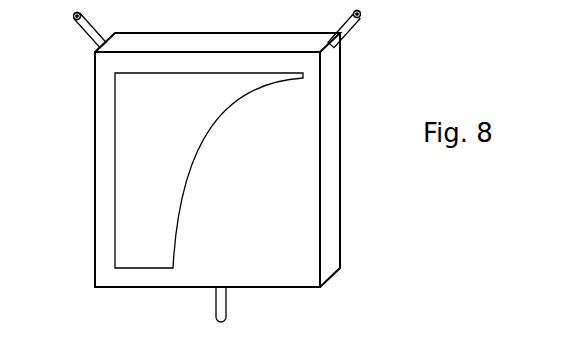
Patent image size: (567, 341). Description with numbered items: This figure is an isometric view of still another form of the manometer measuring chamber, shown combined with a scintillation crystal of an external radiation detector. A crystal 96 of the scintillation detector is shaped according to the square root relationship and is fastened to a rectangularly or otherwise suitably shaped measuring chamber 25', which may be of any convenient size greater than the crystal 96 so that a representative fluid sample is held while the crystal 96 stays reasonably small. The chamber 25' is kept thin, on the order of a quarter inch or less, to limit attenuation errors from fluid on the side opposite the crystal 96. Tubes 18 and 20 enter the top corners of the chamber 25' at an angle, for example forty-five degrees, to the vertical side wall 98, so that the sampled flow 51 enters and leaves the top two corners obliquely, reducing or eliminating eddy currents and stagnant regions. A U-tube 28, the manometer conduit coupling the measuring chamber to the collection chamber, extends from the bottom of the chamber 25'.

The tube 18 is at (91, 23).
The tube 20 is at (346, 22).
The sampled flow 51 is at (71, 12).
The vertical side wall 98 is at (333, 105).
The measuring chamber 25' is at (238, 160).
The crystal 96 is at (115, 222).
The U-tube 28 is at (227, 310).